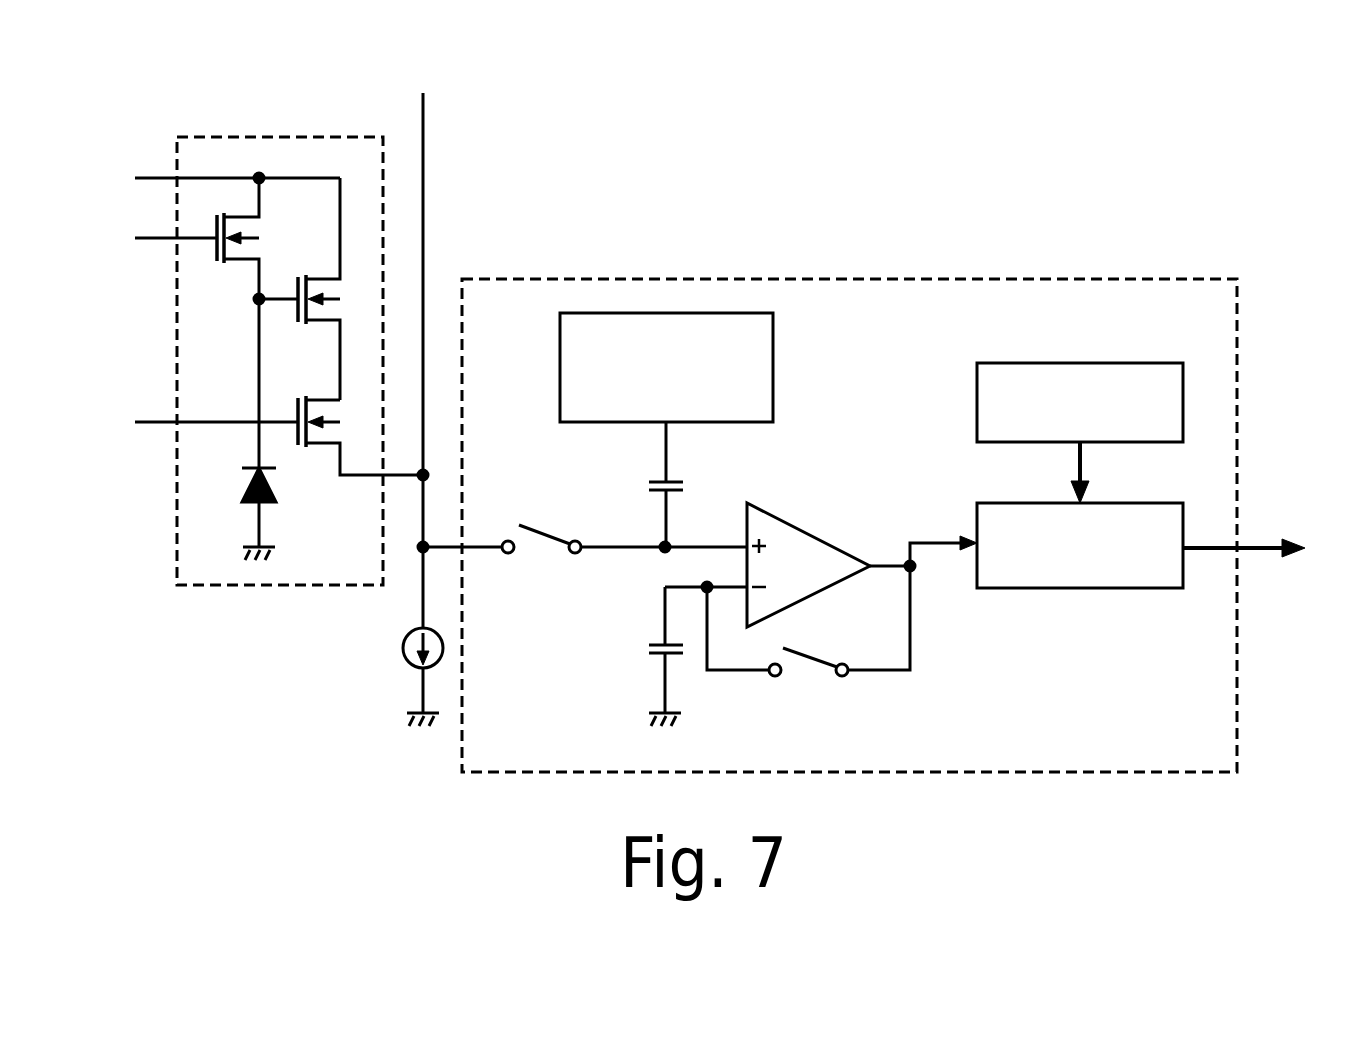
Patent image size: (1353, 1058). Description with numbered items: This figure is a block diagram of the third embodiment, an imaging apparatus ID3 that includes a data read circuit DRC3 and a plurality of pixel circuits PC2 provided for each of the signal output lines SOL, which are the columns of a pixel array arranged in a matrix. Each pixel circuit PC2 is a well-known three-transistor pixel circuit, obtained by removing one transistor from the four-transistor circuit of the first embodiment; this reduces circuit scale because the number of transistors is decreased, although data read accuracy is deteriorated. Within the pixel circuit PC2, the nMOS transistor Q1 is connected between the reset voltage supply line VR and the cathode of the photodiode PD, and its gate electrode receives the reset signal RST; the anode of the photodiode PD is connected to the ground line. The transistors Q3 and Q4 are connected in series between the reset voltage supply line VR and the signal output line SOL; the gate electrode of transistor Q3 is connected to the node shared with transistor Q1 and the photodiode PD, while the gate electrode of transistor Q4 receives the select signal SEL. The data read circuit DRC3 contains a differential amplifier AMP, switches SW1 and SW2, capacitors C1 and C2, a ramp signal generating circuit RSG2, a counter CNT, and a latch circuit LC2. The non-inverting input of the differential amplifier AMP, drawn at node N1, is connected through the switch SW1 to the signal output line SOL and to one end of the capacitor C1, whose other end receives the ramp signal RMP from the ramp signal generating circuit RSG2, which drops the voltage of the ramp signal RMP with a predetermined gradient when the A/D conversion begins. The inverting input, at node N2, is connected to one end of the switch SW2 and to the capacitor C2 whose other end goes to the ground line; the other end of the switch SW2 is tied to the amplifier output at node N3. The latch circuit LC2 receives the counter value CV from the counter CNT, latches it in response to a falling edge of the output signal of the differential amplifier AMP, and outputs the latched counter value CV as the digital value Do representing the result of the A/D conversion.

The imaging apparatus ID3 is at (1177, 168).
The pixel circuit PC2 is at (365, 565).
The reset voltage supply line VR is at (218, 177).
The reset signal RST is at (148, 237).
The select signal SEL is at (188, 423).
The transistor Q1 is at (231, 238).
The transistor Q3 is at (297, 289).
The transistor Q4 is at (354, 421).
The photodiode PD is at (239, 429).
The signal output line SOL is at (423, 393).
The data read circuit DRC3 is at (1213, 748).
The switch SW1 is at (544, 559).
The ramp signal generating circuit RSG2 is at (765, 417).
The ramp signal RMP is at (694, 452).
The capacitor C1 is at (648, 508).
The first node N1 is at (703, 531).
The second node N2 is at (706, 573).
The capacitor C2 is at (647, 656).
The differential amplifier AMP is at (808, 562).
The switch SW2 is at (808, 641).
The third node N3 is at (923, 569).
The counter CNT is at (1103, 434).
The counter value CV is at (1097, 472).
The latch circuit LC2 is at (1168, 578).
The digital value Do is at (1263, 547).